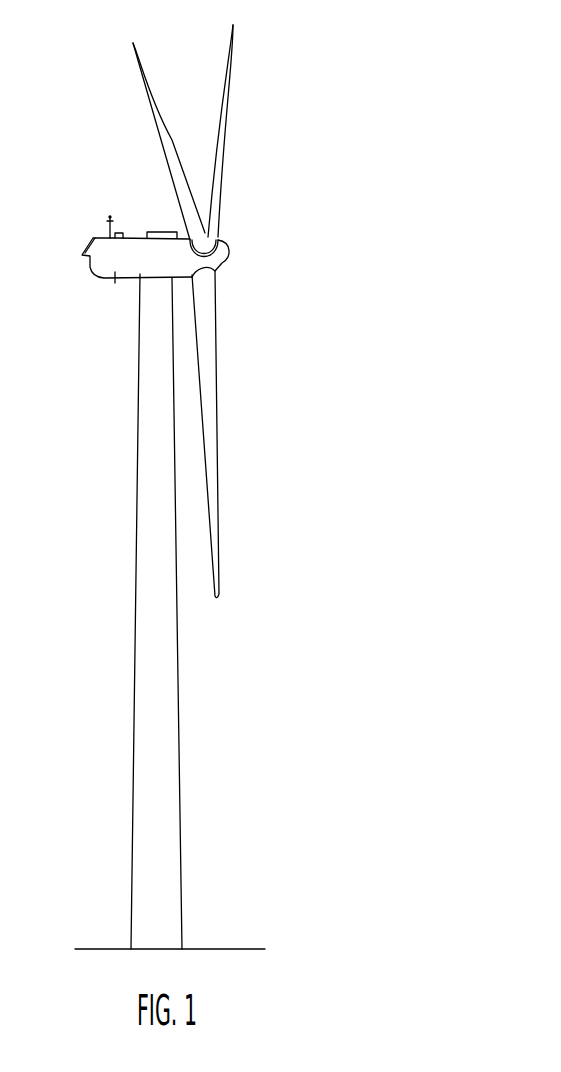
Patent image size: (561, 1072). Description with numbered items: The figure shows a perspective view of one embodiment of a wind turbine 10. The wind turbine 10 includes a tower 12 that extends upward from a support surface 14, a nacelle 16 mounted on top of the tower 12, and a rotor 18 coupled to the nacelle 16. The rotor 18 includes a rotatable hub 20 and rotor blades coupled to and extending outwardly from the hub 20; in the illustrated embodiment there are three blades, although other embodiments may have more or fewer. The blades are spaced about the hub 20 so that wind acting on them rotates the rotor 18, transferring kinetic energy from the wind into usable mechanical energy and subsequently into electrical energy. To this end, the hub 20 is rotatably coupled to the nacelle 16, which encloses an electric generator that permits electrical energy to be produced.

The wind turbine 10 is at (322, 171).
The tower 12 is at (160, 715).
The support surface 14 is at (107, 949).
The nacelle 16 is at (117, 272).
The rotor 18 is at (211, 311).
The rotatable hub 20 is at (227, 255).